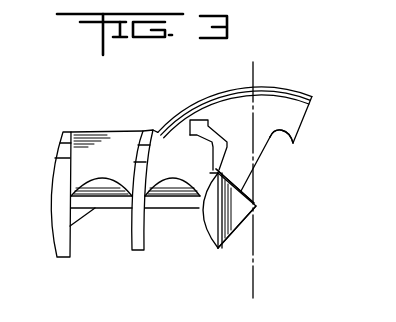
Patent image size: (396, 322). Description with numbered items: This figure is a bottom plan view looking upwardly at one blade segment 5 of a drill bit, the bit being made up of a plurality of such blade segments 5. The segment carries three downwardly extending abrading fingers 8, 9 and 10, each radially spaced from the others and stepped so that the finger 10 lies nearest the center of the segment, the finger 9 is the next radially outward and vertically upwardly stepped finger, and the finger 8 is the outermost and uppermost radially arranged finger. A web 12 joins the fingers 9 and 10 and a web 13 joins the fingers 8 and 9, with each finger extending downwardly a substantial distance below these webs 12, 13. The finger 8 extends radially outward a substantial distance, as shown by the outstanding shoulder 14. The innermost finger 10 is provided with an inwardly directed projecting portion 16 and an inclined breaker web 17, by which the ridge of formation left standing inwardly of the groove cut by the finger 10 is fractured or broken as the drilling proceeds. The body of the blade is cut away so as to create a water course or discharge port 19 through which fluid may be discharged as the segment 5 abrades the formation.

The blade segment 5 is at (275, 99).
The abrading finger 8 is at (77, 258).
The abrading finger 9 is at (138, 252).
The abrading finger 10 is at (231, 246).
The web 12 is at (173, 209).
The web 13 is at (101, 204).
The outstanding shoulder 14 is at (100, 129).
The inwardly directed projecting portion 16 is at (256, 207).
The inclined breaker web 17 is at (240, 224).
The water course or discharge port 19 is at (260, 158).